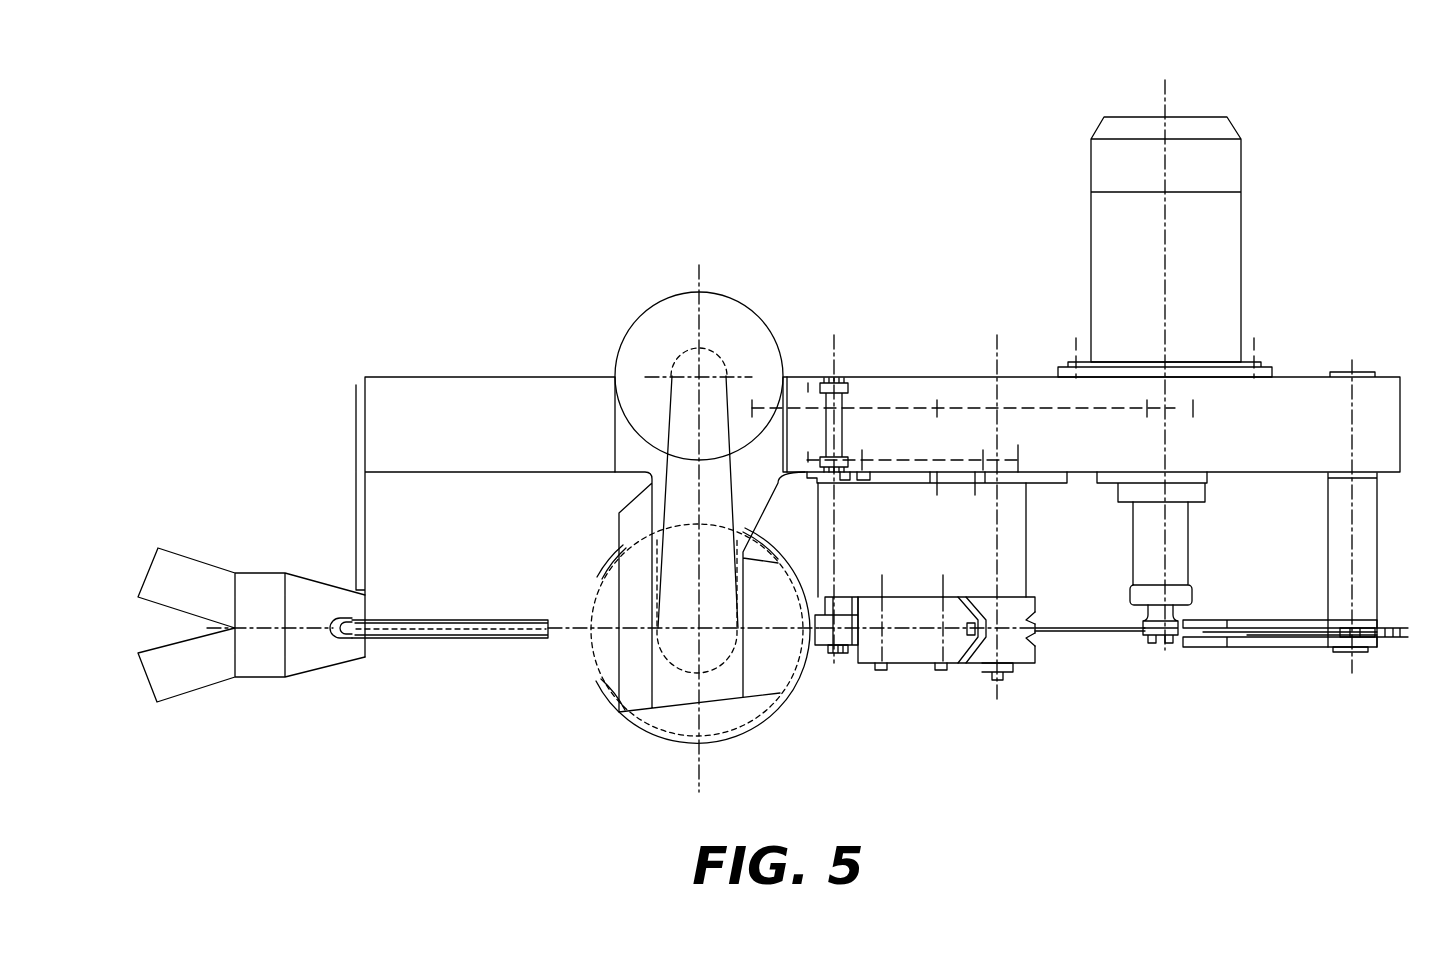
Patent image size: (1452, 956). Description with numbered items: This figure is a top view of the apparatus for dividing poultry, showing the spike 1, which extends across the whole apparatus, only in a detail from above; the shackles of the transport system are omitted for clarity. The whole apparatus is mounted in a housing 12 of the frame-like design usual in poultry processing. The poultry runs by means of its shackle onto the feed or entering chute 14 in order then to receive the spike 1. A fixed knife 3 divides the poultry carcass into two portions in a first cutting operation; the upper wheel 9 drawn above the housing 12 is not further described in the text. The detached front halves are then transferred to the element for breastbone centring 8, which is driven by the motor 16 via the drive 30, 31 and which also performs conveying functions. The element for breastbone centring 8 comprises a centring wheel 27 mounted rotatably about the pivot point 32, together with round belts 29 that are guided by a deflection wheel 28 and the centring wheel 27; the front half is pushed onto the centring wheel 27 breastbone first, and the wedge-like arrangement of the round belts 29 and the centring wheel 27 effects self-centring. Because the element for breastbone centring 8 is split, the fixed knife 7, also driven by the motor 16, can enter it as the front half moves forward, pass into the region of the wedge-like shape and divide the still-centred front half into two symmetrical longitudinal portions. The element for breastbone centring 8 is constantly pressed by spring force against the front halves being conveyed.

The spike 1 is at (543, 645).
The knife 3 is at (748, 708).
The knife 7 is at (1135, 632).
The element for breastbone centring 8 is at (918, 698).
The tension roller 9 is at (745, 318).
The housing 12 is at (503, 390).
The feed or entering chute 14 is at (293, 675).
The motor 16 is at (1212, 130).
The centring wheel 27 is at (1020, 668).
The deflection wheel 28 is at (822, 653).
The round belts 29 is at (1025, 617).
The drive 30 is at (962, 405).
The drive 31 is at (1018, 450).
The pivot point 32 is at (843, 655).